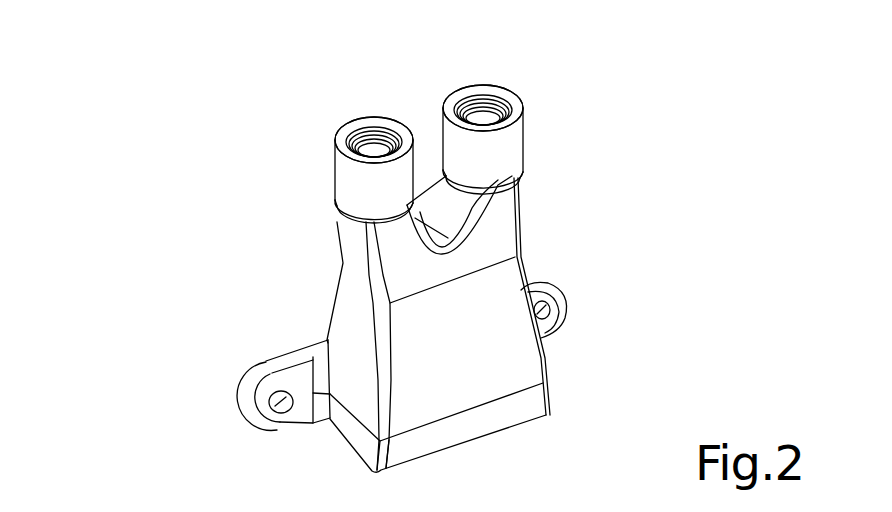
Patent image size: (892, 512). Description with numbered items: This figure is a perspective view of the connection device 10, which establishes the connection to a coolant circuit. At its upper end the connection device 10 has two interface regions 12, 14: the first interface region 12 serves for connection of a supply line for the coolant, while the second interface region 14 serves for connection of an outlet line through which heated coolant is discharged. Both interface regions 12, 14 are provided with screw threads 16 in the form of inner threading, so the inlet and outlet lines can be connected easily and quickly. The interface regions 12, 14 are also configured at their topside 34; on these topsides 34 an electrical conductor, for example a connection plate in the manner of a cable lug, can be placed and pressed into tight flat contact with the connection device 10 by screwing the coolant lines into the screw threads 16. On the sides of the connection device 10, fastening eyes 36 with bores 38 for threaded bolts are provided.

The connection device 10 is at (190, 113).
The first interface region 12 is at (358, 180).
The second interface region 14 is at (502, 155).
The screw threads 16 is at (372, 138).
The topside 34 is at (337, 133).
The fastening eyes 36 is at (262, 402).
The bores 38 is at (283, 410).